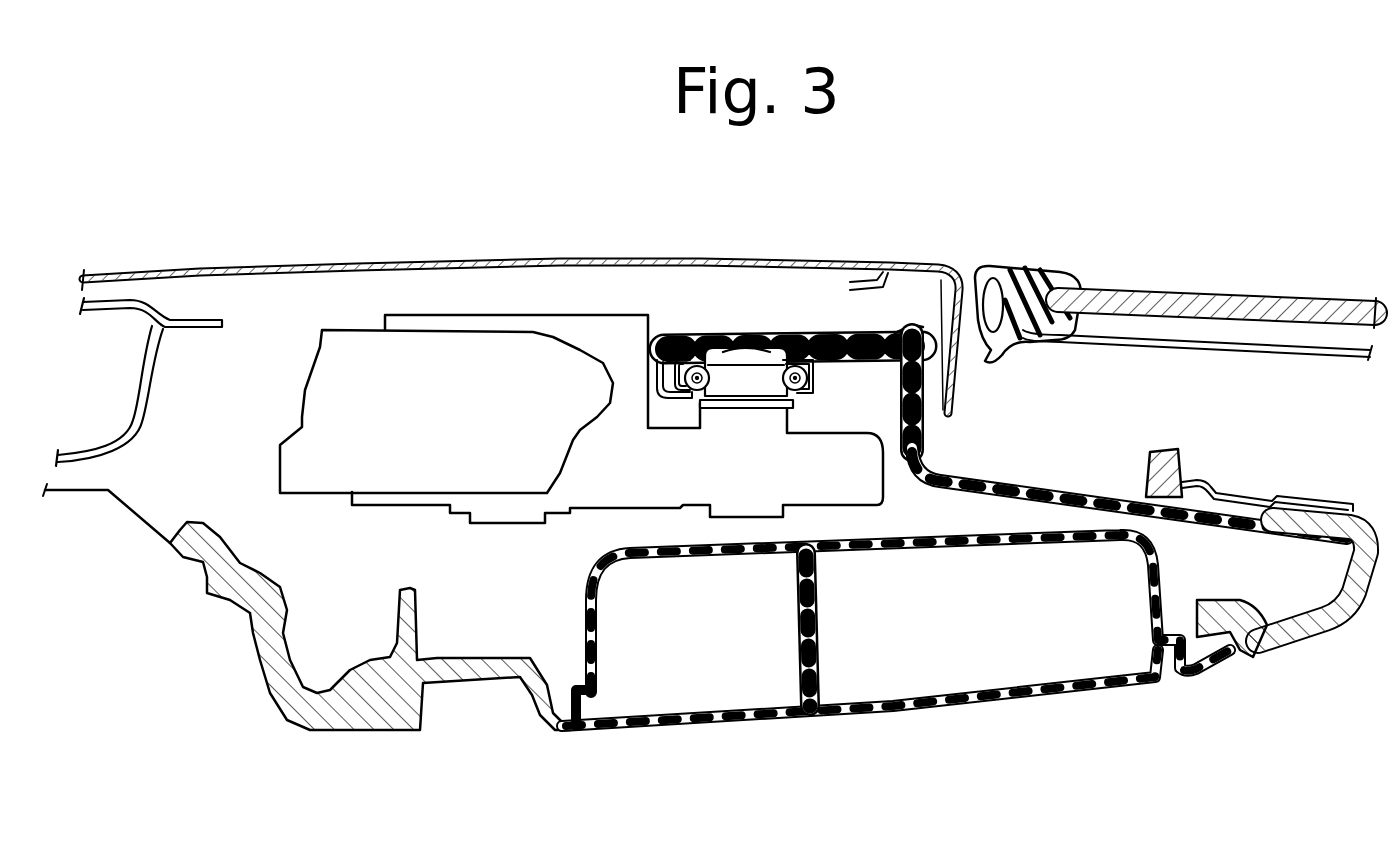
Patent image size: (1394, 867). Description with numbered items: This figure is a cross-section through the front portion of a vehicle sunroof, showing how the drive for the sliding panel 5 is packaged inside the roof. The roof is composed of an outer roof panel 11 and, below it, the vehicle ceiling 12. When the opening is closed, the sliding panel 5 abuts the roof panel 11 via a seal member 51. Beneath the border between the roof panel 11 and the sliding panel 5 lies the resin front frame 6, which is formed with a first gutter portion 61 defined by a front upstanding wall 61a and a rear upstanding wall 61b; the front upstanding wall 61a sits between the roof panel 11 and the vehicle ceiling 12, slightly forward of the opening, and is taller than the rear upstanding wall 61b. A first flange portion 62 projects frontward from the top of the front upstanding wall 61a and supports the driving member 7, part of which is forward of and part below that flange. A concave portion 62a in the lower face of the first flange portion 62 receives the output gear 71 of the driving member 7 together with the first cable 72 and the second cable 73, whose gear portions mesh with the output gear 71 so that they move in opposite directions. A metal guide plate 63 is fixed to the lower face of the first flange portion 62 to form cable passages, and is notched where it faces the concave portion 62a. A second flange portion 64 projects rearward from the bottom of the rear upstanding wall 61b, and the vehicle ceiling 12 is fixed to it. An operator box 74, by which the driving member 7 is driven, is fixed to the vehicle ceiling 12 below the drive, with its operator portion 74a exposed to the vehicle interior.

The sliding panel 5 is at (1189, 297).
The front frame 6 is at (1200, 457).
The driving member 7 is at (512, 541).
The roof panel 11 is at (602, 262).
The vehicle ceiling 12 is at (1303, 633).
The seal member 51 is at (1024, 283).
The first gutter portion 61 is at (1032, 472).
The front upstanding wall 61a is at (907, 403).
The rear upstanding wall 61b is at (1160, 450).
The first flange portion 62 is at (832, 343).
The concave portion 62a is at (799, 393).
The guide plate 63 is at (672, 412).
The second flange portion 64 is at (1266, 512).
The output gear 71 is at (742, 380).
The first cable 72 is at (793, 390).
The second cable 73 is at (690, 362).
The operator box 74 is at (778, 743).
The operator portion 74a is at (907, 714).